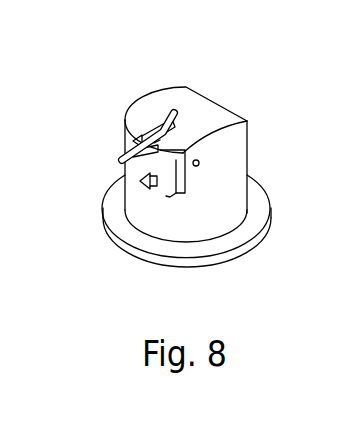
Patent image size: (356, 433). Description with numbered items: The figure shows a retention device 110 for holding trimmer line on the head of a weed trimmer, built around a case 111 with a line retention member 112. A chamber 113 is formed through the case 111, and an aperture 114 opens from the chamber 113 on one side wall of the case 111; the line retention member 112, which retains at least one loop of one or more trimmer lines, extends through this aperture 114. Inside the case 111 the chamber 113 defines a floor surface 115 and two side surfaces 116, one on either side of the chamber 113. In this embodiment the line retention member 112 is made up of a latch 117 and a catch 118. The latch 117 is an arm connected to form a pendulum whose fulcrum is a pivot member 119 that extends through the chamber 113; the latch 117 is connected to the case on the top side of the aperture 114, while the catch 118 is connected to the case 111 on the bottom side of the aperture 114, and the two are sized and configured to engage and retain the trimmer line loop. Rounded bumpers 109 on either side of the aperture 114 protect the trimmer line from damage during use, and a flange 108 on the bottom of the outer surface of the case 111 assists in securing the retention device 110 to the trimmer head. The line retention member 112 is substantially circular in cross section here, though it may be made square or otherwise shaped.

The flange 108 is at (258, 208).
The bumpers 109 is at (188, 180).
The retention device 110 is at (224, 67).
The case 111 is at (178, 98).
The line retention member 112 is at (166, 126).
The chamber 113 is at (160, 197).
The aperture 114 is at (240, 133).
The floor surface 115 is at (137, 169).
The side surfaces 116 is at (133, 141).
The latch 117 is at (177, 154).
The catch 118 is at (156, 189).
The pivot member 119 is at (198, 166).